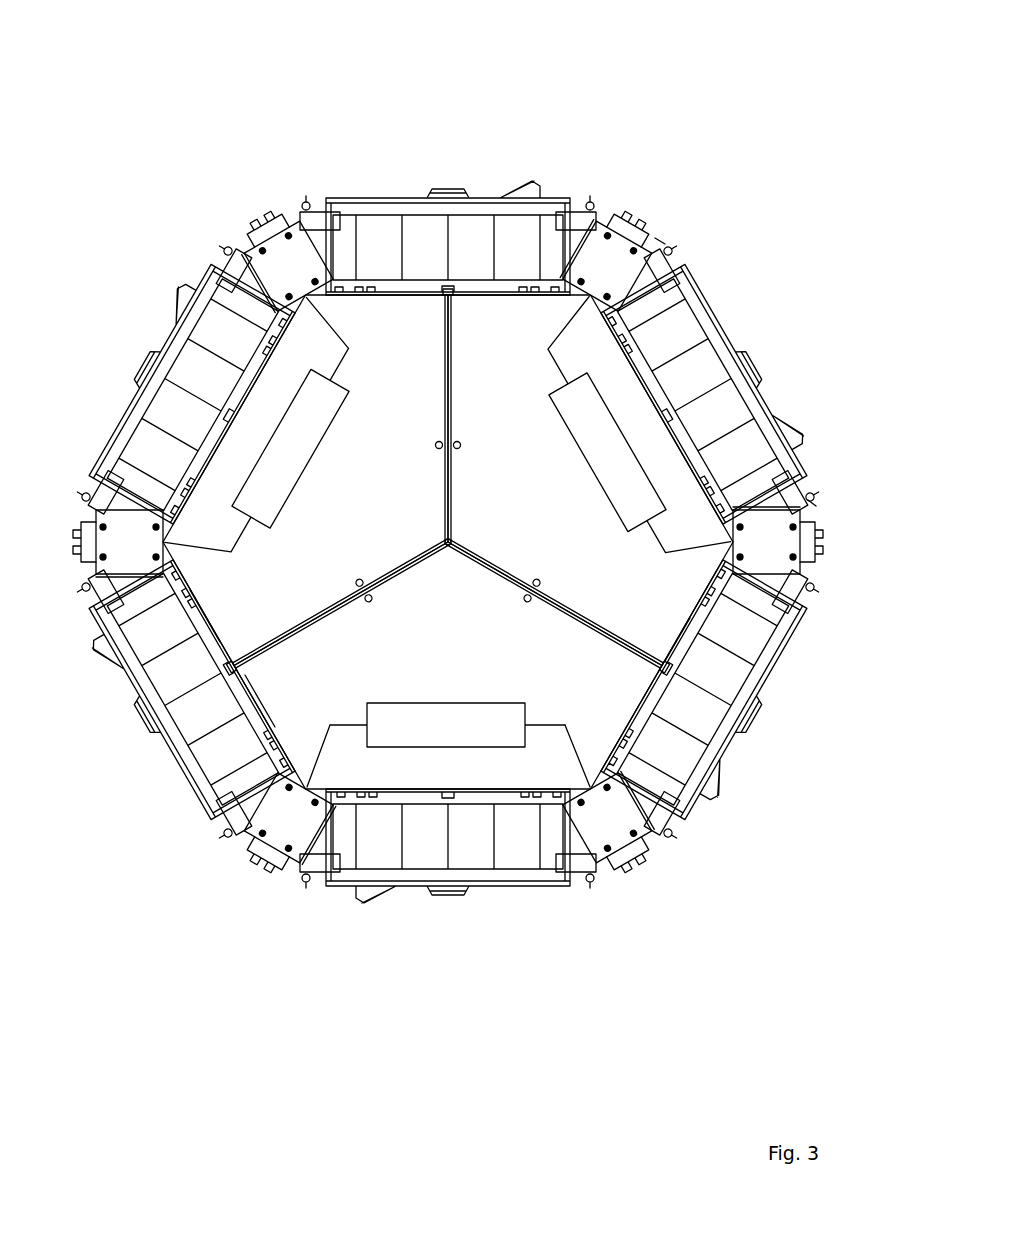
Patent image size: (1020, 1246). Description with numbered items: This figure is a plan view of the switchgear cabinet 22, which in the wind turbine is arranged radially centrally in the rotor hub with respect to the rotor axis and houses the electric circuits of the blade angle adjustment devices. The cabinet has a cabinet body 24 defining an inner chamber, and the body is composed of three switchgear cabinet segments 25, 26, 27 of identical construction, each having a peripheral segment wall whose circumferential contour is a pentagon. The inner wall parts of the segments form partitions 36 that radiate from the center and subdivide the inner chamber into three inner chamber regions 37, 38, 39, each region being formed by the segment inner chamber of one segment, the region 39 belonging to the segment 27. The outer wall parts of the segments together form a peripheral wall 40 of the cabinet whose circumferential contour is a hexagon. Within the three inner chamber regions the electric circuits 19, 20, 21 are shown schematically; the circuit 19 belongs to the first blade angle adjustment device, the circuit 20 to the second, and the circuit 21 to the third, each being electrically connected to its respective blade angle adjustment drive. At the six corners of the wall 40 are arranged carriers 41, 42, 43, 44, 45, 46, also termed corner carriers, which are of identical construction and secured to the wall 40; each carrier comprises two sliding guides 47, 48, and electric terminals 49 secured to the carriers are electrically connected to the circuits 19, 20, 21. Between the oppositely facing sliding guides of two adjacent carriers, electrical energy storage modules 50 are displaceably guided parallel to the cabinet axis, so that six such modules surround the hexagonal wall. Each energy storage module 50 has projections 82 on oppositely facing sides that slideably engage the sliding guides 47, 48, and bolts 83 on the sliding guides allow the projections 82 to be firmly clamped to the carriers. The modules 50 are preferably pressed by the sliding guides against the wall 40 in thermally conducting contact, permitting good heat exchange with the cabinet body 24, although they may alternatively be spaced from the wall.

The switchgear cabinet 22 is at (192, 60).
The electrical energy storage module 50 is at (383, 205).
The carrier 43 is at (292, 243).
The carrier 42 is at (604, 244).
The carrier 41 is at (782, 555).
The carrier 44 is at (103, 520).
The carrier 45 is at (258, 835).
The carrier 46 is at (606, 850).
The electric terminal 49 is at (265, 225).
The sliding guide 47 is at (668, 234).
The sliding guide 48 is at (822, 507).
The projection 82 is at (663, 278).
The bolt 83 is at (665, 262).
The partition 36 is at (452, 350).
The inner chamber region 37 is at (346, 550).
The inner chamber region 38 is at (453, 639).
The inner chamber region 39 is at (528, 470).
The electric circuit 19 is at (312, 482).
The electric circuit 20 is at (492, 710).
The electric circuit 21 is at (610, 488).
The cabinet body 24 is at (660, 683).
The switchgear cabinet segment 25 is at (215, 605).
The switchgear cabinet segment 26 is at (270, 697).
The switchgear cabinet segment 27 is at (668, 626).
The peripheral wall 40 is at (602, 772).